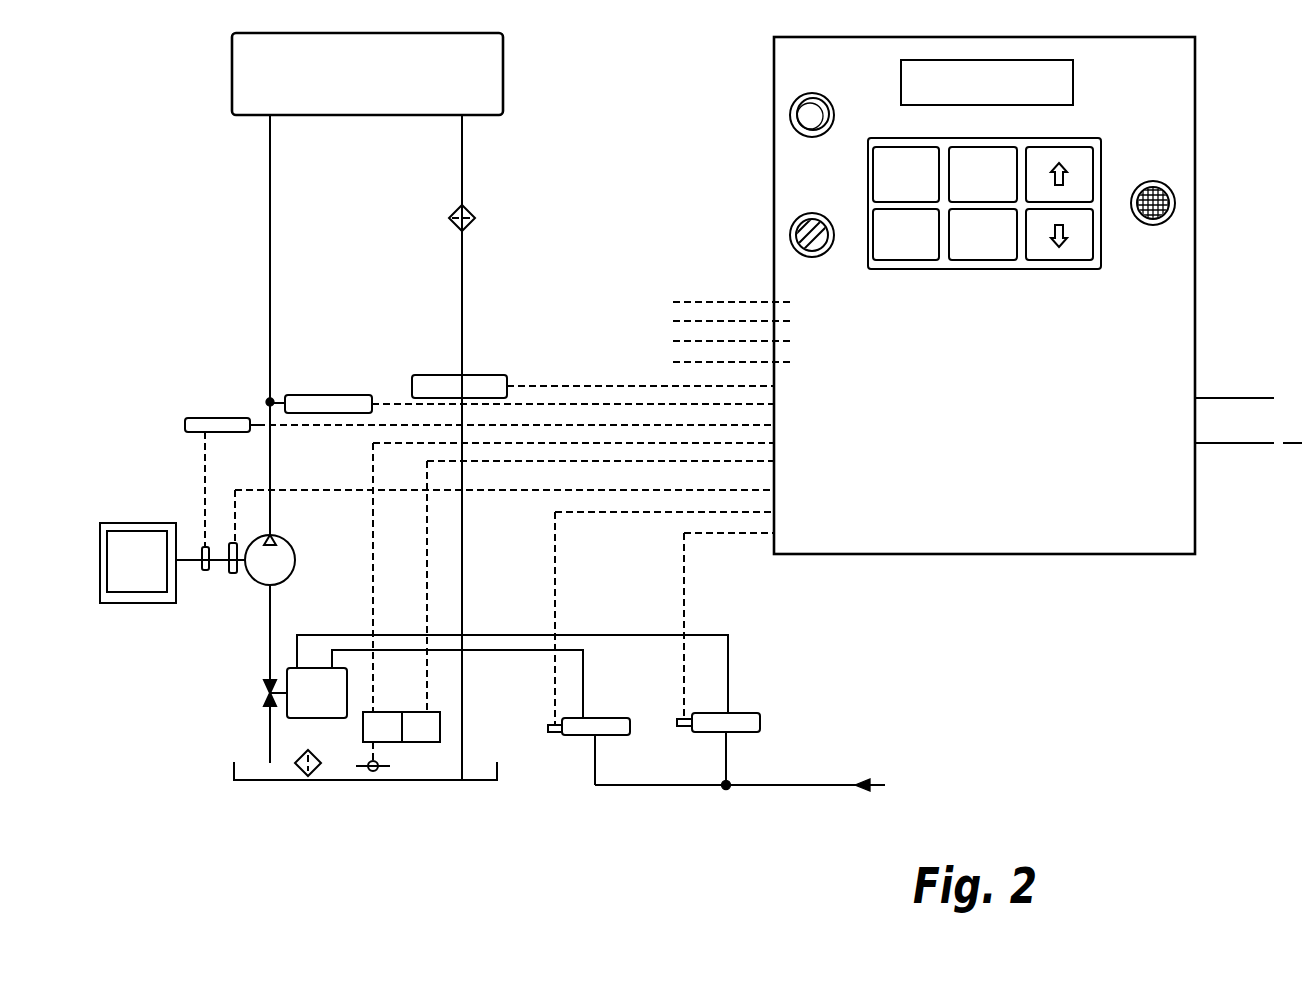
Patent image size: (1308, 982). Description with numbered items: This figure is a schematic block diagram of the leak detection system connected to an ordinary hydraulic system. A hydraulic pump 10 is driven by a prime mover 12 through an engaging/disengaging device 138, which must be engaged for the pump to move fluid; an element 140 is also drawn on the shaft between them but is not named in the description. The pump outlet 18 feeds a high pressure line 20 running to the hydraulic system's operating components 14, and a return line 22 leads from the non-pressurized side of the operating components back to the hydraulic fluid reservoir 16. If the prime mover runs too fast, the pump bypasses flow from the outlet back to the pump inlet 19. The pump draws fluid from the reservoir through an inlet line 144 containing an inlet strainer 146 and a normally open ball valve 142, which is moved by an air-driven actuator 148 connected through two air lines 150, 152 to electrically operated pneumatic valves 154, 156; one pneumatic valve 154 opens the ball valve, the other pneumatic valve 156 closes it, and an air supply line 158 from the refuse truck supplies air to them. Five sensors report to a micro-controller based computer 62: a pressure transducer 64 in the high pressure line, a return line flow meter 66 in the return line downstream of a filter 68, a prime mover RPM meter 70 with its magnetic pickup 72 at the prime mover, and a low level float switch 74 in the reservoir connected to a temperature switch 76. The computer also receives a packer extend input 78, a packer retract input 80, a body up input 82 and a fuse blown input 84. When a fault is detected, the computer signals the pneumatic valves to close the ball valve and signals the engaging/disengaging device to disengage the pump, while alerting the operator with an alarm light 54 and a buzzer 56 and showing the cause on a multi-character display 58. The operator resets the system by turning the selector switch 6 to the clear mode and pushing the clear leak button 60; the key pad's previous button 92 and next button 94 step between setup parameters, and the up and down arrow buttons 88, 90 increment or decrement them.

The hydraulic system operating components 14 is at (503, 52).
The high pressure line 20 is at (271, 192).
The return line 22 is at (462, 162).
The filter 68 is at (474, 224).
The prime mover RPM meter 70 is at (203, 418).
The pressure transducer 64 is at (323, 395).
The return line flow meter 66 is at (483, 375).
The prime mover 12 is at (135, 532).
The drive shaft 140 is at (220, 568).
The prime mover RPM magnetic pickup 72 is at (204, 546).
The engaging/disengaging device 138 is at (234, 575).
The hydraulic pump 10 is at (290, 572).
The pump outlet 18 is at (277, 537).
The pump inlet 19 is at (278, 584).
The inlet line 144 is at (268, 638).
The ball valve 142 is at (264, 696).
The air-driven actuator 148 is at (318, 712).
The air line 152 is at (508, 635).
The air line 150 is at (517, 650).
The low level float switch 74 is at (389, 712).
The temperature switch 76 is at (423, 742).
The inlet strainer 146 is at (303, 778).
The hydraulic fluid reservoir 16 is at (250, 774).
The pneumatic valve 154 is at (610, 718).
The pneumatic valve 156 is at (745, 713).
The air supply line 158 is at (757, 788).
The micro-controller based computer 62 is at (1195, 495).
The fuse blown input 84 is at (680, 302).
The packer extend input 78 is at (675, 320).
The packer retract input 80 is at (675, 341).
The body up input 82 is at (680, 363).
The multi-character display 58 is at (1073, 88).
The alarm light 54 is at (790, 112).
The selector switch 6 is at (790, 226).
The buzzer 56 is at (1170, 218).
The clear leak button 60 is at (873, 178).
The previous button 92 is at (983, 156).
The next button 94 is at (997, 252).
The up arrow button 88 is at (1085, 170).
The down arrow button 90 is at (1072, 252).